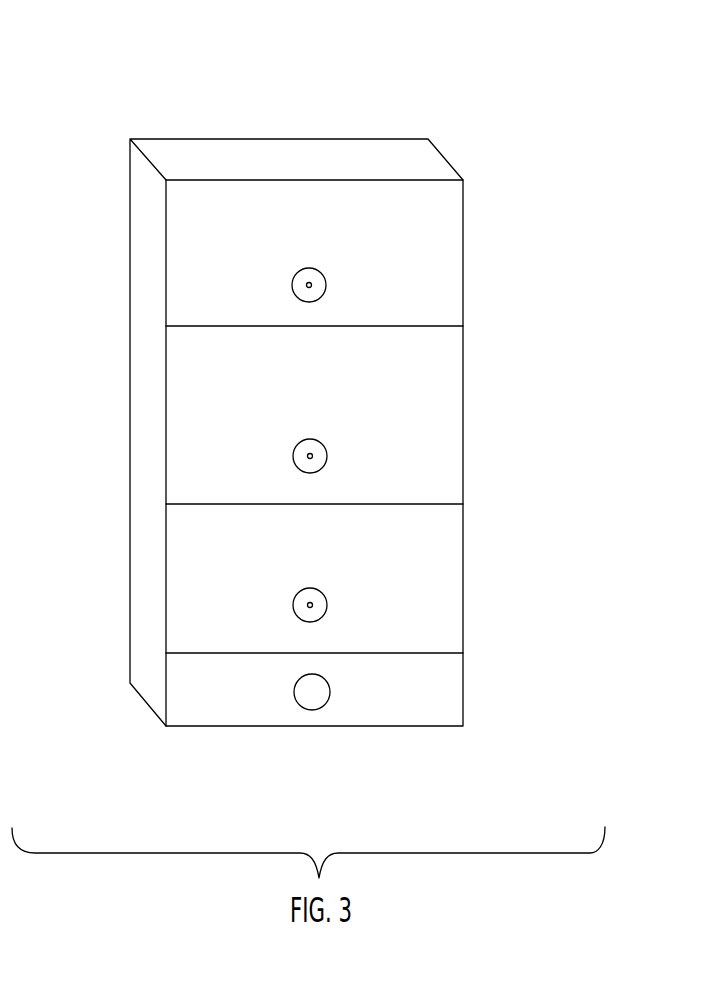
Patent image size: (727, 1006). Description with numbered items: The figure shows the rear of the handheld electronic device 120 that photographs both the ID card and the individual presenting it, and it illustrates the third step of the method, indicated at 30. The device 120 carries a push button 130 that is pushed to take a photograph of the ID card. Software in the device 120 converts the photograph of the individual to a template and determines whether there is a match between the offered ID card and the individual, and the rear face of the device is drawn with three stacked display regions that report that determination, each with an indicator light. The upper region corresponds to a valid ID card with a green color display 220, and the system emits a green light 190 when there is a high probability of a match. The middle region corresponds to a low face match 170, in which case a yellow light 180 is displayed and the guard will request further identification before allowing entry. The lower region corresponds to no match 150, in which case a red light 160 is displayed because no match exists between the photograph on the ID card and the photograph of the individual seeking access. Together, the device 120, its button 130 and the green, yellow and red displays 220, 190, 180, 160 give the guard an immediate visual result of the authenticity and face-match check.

The Step 3 of the method 30 is at (334, 32).
The electronic camera device 120 is at (137, 684).
The push button 130 is at (311, 712).
The green light display 220 is at (381, 214).
The green light 190 is at (323, 296).
The low match 170 is at (410, 420).
The yellow light 180 is at (327, 475).
The no match 150 is at (403, 568).
The red light 160 is at (328, 622).